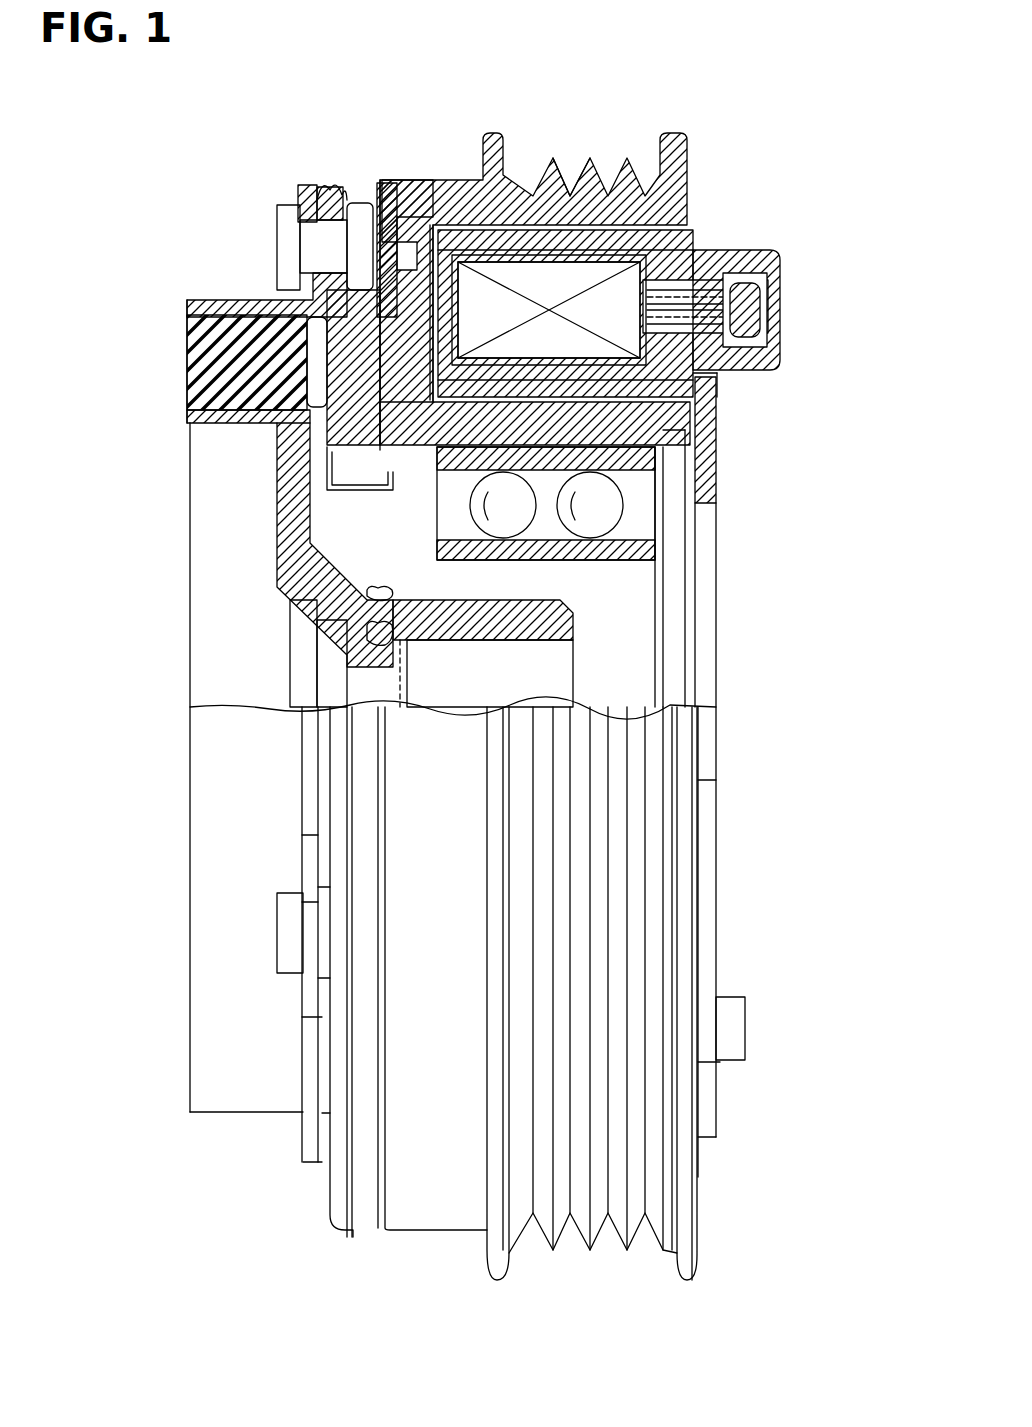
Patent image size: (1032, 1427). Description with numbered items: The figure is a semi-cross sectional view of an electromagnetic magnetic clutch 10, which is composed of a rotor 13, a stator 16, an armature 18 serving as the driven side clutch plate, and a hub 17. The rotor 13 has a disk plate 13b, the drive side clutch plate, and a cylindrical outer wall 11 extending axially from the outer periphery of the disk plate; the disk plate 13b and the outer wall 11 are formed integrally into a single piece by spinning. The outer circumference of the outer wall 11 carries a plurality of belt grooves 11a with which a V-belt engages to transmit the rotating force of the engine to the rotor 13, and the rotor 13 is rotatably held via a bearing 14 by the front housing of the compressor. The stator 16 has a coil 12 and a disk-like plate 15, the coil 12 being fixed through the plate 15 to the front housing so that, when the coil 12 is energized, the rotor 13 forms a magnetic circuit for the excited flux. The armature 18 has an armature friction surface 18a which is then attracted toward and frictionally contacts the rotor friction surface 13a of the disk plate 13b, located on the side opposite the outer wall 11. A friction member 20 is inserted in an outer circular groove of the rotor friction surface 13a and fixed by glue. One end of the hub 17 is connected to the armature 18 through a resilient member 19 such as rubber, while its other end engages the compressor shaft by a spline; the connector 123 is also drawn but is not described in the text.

The magnetic clutch 10 is at (246, 170).
The cylindrical outer wall 11 is at (690, 187).
The belt grooves 11a is at (558, 157).
The coil 12 is at (598, 277).
The rotor 13 is at (420, 190).
The rotor friction surface 13a is at (396, 250).
The disk plate 13b is at (290, 312).
The bearing 14 is at (662, 460).
The disk-like plate 15 is at (705, 418).
The stator 16 is at (700, 240).
The hub 17 is at (568, 626).
The armature 18 is at (318, 452).
The armature friction surface 18a is at (330, 378).
The resilient member 19 is at (232, 342).
The friction member 20 is at (320, 200).
The connector 123 is at (786, 275).